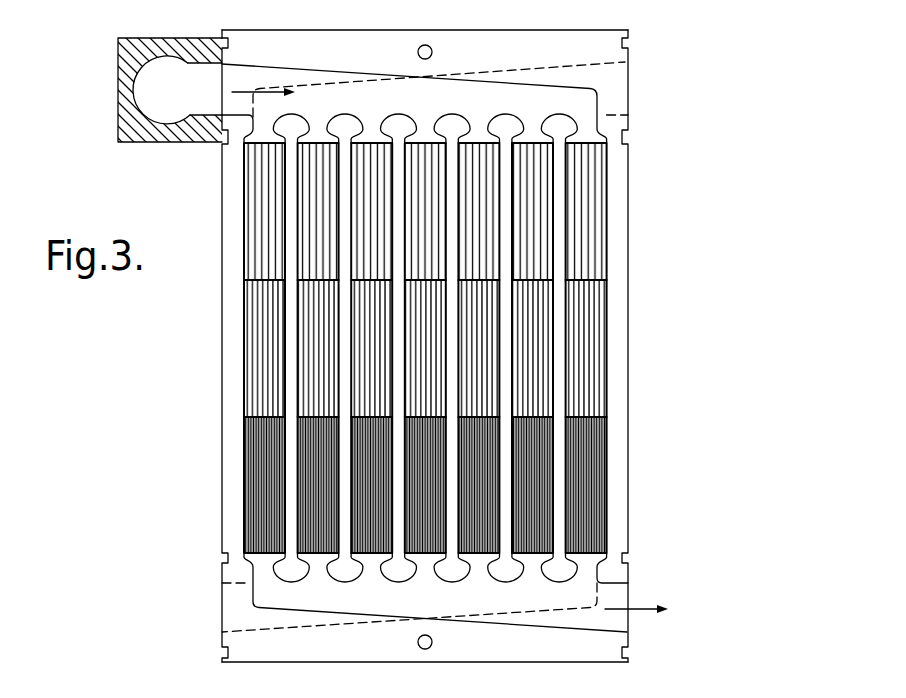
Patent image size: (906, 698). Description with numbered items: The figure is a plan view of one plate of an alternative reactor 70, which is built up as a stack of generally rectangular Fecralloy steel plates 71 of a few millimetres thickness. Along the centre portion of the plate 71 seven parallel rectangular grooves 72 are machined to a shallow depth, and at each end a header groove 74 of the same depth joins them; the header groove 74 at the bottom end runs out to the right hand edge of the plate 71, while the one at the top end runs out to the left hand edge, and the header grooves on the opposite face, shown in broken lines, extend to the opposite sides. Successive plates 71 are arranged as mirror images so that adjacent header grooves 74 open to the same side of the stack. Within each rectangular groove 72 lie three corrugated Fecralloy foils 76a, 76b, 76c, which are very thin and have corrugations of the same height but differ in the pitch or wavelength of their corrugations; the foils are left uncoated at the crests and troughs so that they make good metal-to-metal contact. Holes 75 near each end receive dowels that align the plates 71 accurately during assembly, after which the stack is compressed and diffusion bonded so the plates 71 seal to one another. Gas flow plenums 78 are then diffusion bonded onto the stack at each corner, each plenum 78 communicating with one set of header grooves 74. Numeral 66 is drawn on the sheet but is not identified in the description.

The alternative reactor 70 is at (726, 122).
The Fecralloy steel plate 71 is at (427, 346).
The rectangular groove 72 is at (430, 348).
The header groove 74 is at (328, 98).
The hole 75 is at (432, 52).
The corrugated Fecralloy foil 76a is at (253, 192).
The corrugated Fecralloy foil 76b is at (253, 307).
The corrugated Fecralloy foil 76c is at (243, 463).
The gas flow plenum 78 is at (118, 132).
The side wall 66 is at (212, 548).